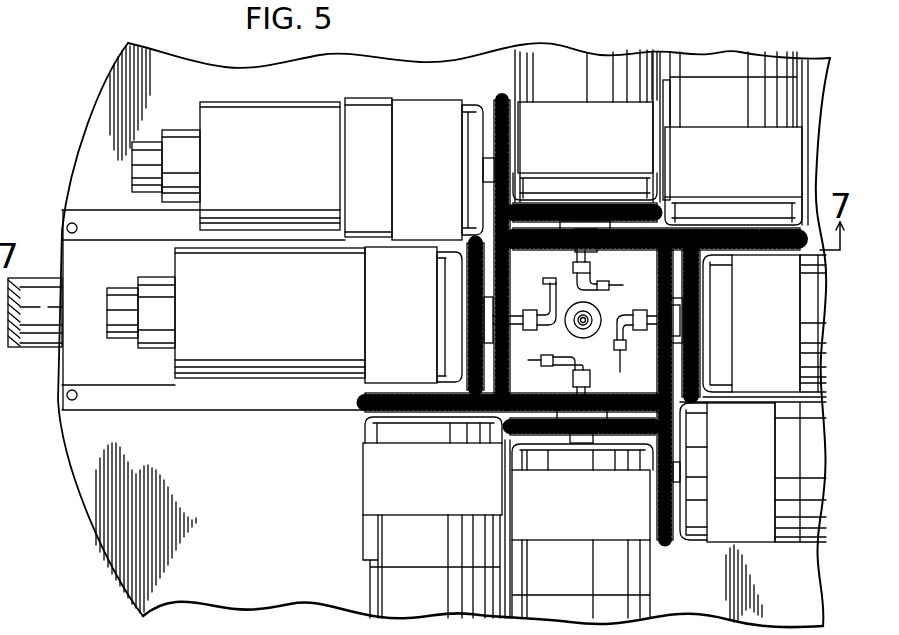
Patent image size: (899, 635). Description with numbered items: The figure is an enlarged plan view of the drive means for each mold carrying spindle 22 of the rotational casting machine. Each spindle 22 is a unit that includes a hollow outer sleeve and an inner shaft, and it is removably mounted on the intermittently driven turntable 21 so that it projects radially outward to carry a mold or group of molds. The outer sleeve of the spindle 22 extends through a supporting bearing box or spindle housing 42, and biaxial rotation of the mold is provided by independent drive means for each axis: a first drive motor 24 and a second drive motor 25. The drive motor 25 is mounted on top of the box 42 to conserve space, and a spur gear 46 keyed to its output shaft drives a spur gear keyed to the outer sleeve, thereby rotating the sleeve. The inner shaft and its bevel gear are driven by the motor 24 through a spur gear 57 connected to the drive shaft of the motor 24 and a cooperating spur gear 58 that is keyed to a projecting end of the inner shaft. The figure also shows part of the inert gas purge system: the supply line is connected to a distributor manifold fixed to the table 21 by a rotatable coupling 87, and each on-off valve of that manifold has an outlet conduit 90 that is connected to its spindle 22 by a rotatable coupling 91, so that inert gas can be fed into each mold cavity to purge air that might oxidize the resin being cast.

The turntable 21 is at (82, 470).
The mold carrying spindle 22 is at (28, 278).
The first drive motor 24 is at (423, 112).
The second drive motor 25 is at (345, 374).
The spindle housing 42 is at (120, 375).
The spur gear 46 is at (560, 208).
The spur gear 57 is at (497, 100).
The spur gear 58 is at (632, 232).
The rotatable coupling 87 is at (578, 316).
The outlet conduit 90 is at (547, 284).
The rotatable coupling 91 is at (600, 283).